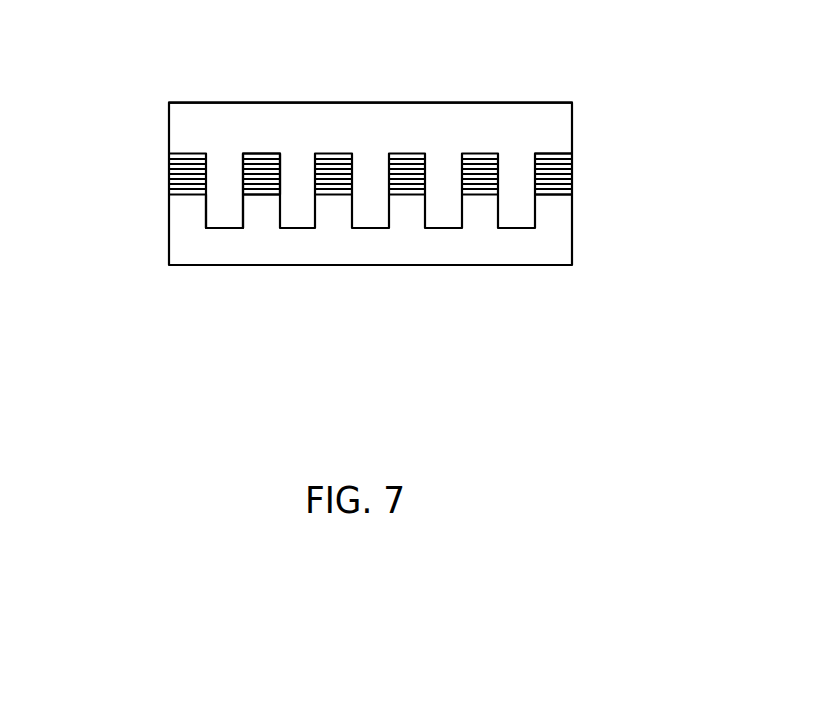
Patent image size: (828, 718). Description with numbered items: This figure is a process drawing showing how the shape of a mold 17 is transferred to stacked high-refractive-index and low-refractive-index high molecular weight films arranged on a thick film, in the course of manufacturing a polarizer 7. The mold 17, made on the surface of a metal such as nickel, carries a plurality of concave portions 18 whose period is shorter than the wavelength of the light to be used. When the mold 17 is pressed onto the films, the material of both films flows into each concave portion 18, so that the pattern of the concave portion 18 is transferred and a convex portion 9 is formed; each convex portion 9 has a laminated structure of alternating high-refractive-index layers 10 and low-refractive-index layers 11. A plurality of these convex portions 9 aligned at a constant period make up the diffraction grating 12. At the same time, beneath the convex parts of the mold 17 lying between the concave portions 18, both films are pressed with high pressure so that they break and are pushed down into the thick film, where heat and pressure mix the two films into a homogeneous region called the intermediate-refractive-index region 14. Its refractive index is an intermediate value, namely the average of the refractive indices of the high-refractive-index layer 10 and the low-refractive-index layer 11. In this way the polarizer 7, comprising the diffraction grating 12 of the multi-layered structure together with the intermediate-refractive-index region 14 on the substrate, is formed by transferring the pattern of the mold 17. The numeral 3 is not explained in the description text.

The optical recording medium 3 is at (168, 243).
The polarizer 7 is at (572, 205).
The convex portion 9 is at (243, 168).
The high-refractive-index layer 10 is at (186, 153).
The low-refractive-index layer 11 is at (168, 158).
The diffraction grating 12 is at (572, 152).
The intermediate-refractive-index region 14 is at (225, 229).
The mold 17 is at (572, 132).
The concave portion 18 is at (264, 160).